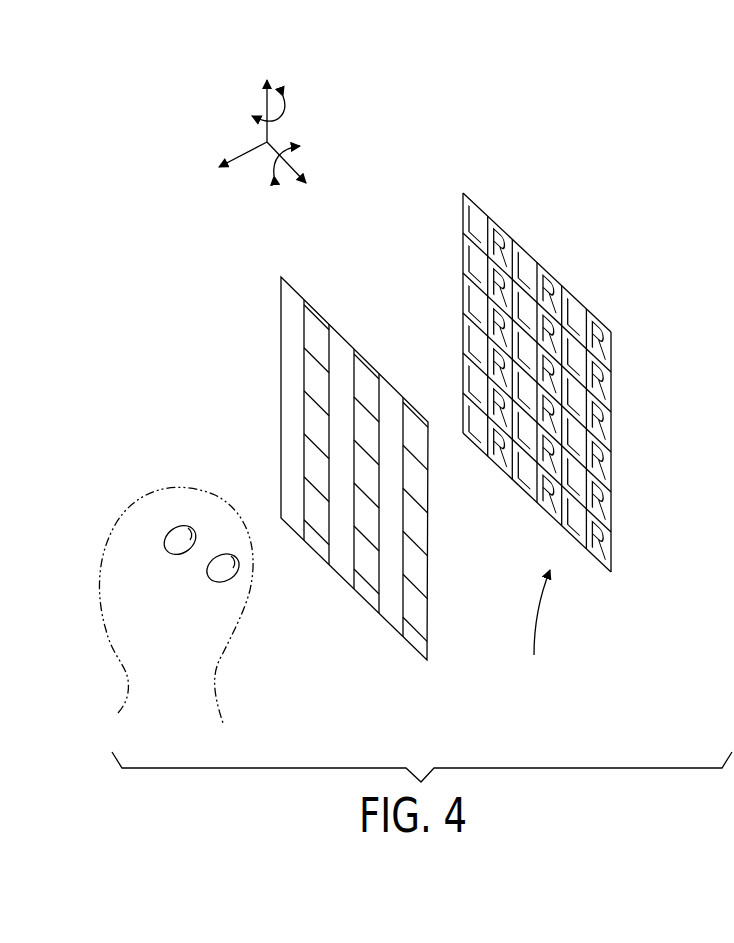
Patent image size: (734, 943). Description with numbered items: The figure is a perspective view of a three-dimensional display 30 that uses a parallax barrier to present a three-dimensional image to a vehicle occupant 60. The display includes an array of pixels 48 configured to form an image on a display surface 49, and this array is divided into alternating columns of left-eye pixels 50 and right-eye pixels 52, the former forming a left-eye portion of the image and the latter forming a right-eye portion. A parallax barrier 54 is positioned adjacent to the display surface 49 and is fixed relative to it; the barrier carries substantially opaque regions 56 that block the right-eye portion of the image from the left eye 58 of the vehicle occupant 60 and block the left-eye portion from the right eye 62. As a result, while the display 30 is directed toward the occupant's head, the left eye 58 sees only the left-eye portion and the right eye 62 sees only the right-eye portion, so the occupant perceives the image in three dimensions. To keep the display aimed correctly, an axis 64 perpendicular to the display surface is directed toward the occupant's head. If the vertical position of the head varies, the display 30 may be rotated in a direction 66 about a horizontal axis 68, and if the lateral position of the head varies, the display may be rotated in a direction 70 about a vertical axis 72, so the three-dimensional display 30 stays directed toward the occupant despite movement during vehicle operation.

The 3D display 30 is at (670, 508).
The array of pixels 48 is at (612, 399).
The display surface 49 is at (535, 630).
The left-eye pixels 50 is at (479, 206).
The right-eye pixels 52 is at (508, 229).
The parallax barrier 54 is at (281, 344).
The substantially opaque regions 56 is at (318, 332).
The left eye 58 is at (176, 539).
The vehicle occupant 60 is at (102, 550).
The right eye 62 is at (222, 572).
The axis 64 is at (242, 151).
The direction 66 is at (291, 157).
The horizontal axis 68 is at (292, 178).
The direction 70 is at (281, 119).
The vertical axis 72 is at (263, 102).